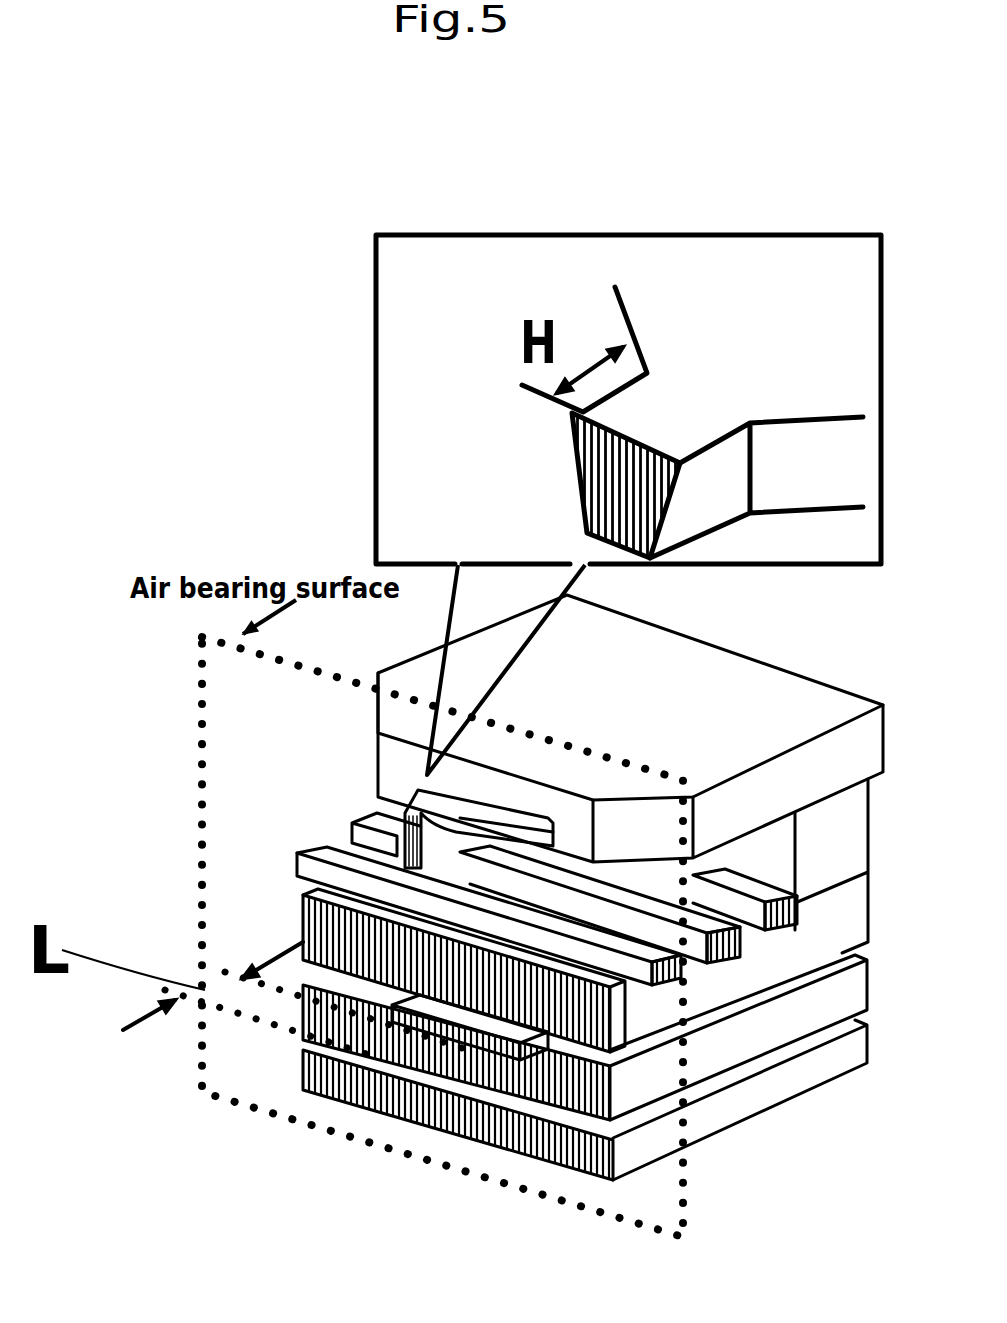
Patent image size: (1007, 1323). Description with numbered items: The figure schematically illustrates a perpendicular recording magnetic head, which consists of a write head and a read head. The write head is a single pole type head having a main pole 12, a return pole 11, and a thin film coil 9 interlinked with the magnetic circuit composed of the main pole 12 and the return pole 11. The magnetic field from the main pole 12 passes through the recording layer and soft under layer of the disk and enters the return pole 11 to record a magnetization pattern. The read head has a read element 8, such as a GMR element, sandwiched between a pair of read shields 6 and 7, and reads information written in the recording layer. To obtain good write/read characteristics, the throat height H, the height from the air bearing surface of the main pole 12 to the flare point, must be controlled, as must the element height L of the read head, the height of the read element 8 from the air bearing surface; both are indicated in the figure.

The read shield 6 is at (724, 1109).
The read shield 7 is at (761, 1027).
The read element 8 is at (403, 1072).
The thin film coil 9 is at (297, 856).
The return pole 11 is at (303, 900).
The main pole 12 is at (400, 819).